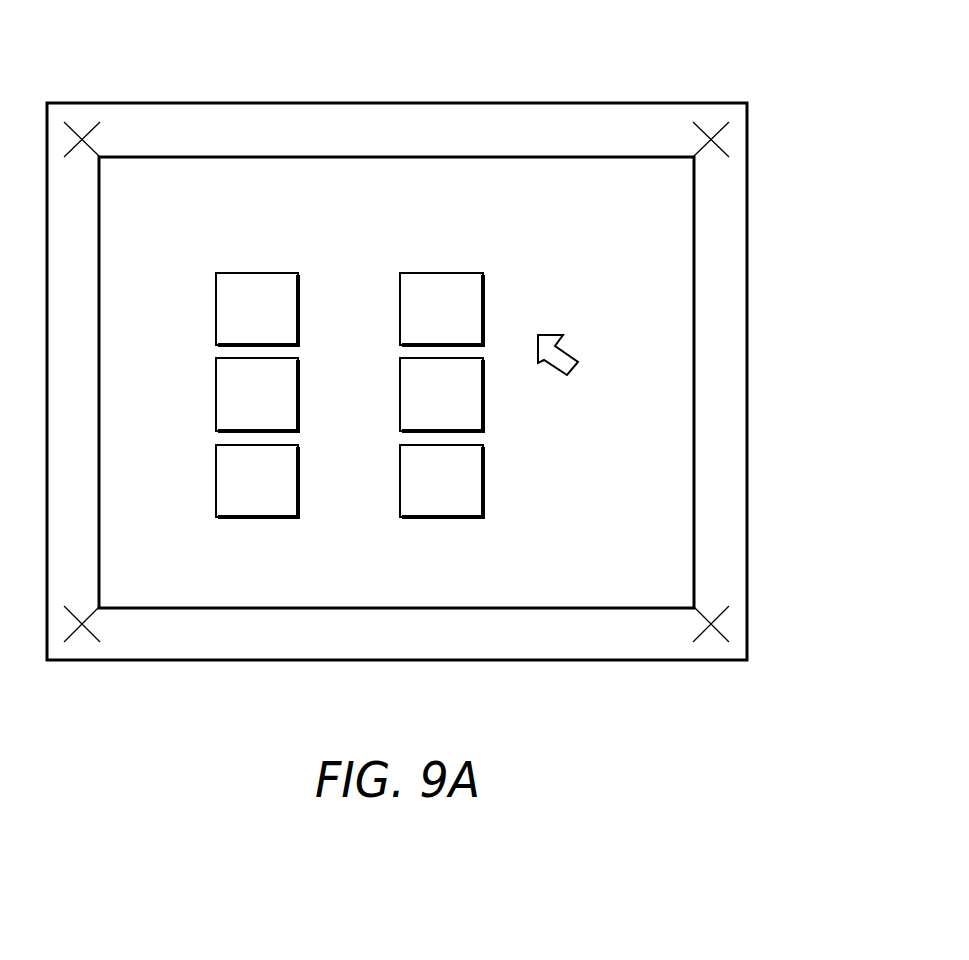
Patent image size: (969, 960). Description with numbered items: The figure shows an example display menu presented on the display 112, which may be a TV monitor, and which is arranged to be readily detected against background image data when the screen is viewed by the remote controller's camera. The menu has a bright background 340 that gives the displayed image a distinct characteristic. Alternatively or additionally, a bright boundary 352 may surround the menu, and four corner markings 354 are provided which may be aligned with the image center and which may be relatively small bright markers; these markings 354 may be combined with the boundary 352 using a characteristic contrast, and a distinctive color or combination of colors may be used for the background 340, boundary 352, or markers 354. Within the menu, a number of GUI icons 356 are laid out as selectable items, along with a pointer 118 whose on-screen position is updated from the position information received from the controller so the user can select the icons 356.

The display 112 is at (672, 73).
The bright boundary 352 is at (720, 325).
The corner markings 354 is at (720, 149).
The bright background 340 is at (618, 434).
The GUI icons 356 is at (440, 273).
The pointer 118 is at (571, 350).